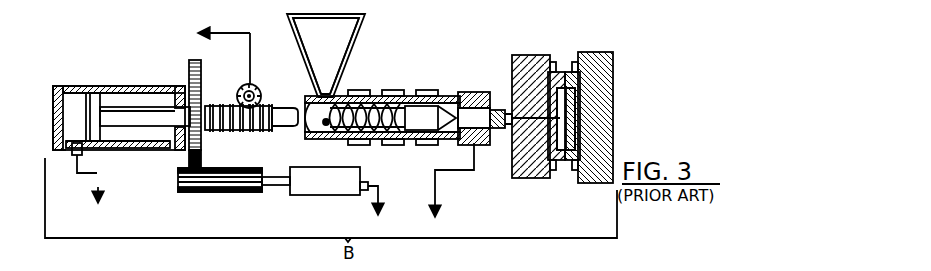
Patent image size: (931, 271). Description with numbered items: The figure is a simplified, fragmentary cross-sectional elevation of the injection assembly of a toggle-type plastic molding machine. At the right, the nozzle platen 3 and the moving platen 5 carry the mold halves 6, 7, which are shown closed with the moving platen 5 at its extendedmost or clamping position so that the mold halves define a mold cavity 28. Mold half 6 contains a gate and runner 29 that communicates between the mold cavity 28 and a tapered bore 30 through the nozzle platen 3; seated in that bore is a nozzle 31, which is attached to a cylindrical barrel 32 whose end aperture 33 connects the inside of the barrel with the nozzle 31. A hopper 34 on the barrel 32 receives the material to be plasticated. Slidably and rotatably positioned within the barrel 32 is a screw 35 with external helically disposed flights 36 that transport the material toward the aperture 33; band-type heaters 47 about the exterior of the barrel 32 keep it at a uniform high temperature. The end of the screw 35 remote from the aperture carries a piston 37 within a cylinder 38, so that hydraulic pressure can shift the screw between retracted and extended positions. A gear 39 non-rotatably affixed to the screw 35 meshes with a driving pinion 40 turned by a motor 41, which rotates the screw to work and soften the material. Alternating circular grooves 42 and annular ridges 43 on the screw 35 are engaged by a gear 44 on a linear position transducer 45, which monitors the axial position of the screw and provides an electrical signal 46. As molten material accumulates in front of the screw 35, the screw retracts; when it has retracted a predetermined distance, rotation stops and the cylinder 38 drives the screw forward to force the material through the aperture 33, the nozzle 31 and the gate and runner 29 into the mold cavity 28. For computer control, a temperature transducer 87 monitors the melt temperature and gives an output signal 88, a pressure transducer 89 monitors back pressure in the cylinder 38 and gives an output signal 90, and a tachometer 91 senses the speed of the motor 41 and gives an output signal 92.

The nozzle platen 3 is at (522, 178).
The moving platen 5 is at (600, 183).
The mold half 6 is at (540, 58).
The mold half 7 is at (580, 55).
The mold cavity 28 is at (560, 152).
The gate and runner 29 is at (557, 118).
The tapered bore 30 is at (506, 108).
The nozzle 31 is at (512, 110).
The cylindrical barrel 32 is at (425, 95).
The aperture (passage) 33 is at (505, 110).
The hopper 34 is at (292, 22).
The screw 35 is at (377, 90).
The helically disposed flights 36 is at (364, 145).
The piston 37 is at (93, 93).
The cylinder 38 is at (128, 86).
The gear 39 is at (194, 100).
The driving pinion 40 is at (210, 192).
The motor 41 is at (300, 168).
The circular grooves 42 is at (220, 131).
The annular ridges 43 is at (244, 132).
The gear 44 is at (263, 95).
The linear position transducer 45 is at (241, 82).
The electrical signal 46 is at (250, 57).
The band-type heaters 47 is at (195, 60).
The temperature transducer 87 is at (468, 128).
The output signal 88 is at (433, 184).
The pressure transducer 89 is at (68, 125).
The output signal 90 is at (100, 176).
The tachometer 91 is at (371, 184).
The output signal 92 is at (375, 192).